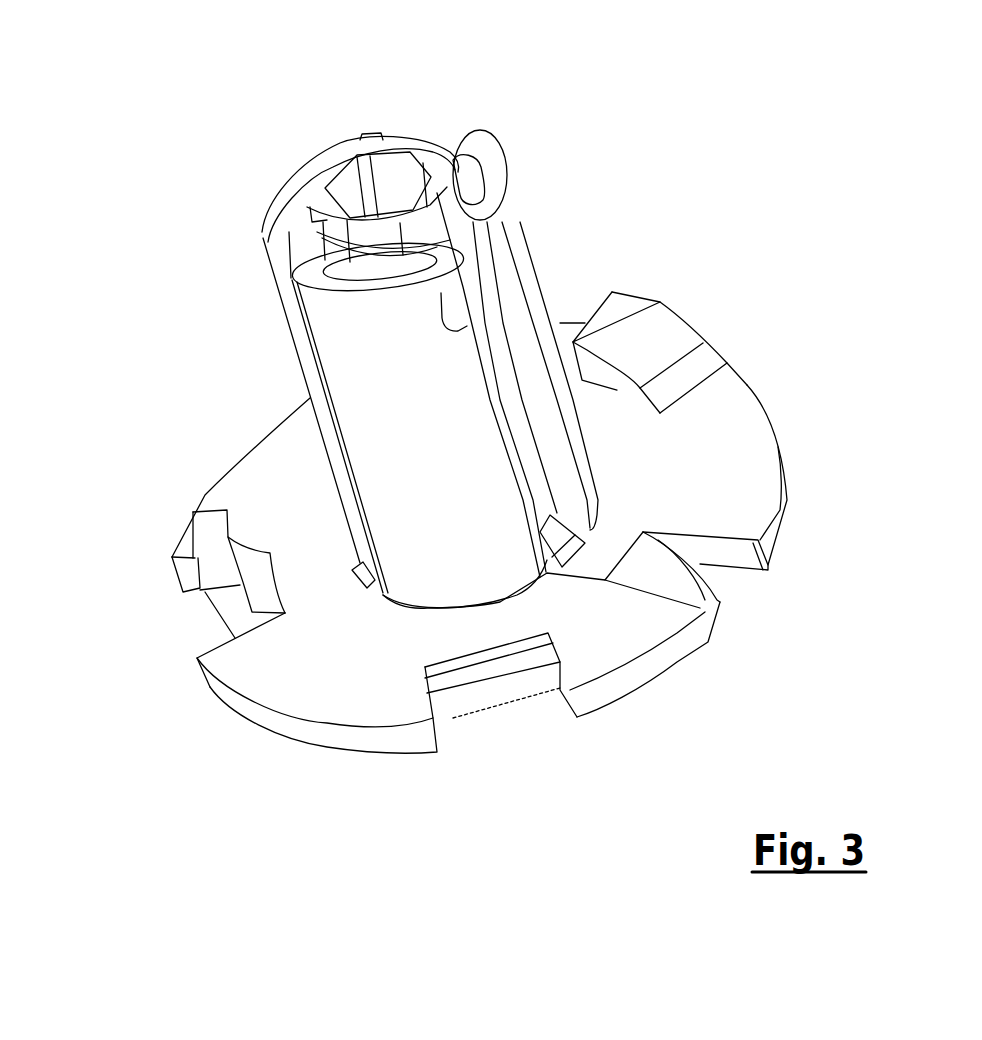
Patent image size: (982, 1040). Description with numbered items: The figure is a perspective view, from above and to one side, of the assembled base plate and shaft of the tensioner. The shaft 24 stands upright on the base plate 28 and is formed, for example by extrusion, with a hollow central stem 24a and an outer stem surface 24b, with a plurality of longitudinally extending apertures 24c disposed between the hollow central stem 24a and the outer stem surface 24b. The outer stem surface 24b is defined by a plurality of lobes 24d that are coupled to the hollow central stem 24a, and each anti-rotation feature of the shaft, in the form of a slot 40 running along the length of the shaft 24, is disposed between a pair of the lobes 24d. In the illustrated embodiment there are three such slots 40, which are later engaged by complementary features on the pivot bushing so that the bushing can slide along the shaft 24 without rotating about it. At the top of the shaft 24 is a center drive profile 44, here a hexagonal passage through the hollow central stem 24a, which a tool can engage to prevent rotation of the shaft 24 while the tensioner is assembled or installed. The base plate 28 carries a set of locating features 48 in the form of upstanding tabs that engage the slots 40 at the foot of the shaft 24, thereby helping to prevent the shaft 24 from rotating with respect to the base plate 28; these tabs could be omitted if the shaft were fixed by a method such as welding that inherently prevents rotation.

The shaft 24 is at (527, 167).
The hollow central stem 24a is at (433, 157).
The outer stem surface 24b is at (447, 332).
The longitudinally extending apertures 24c is at (470, 170).
The lobes 24d is at (497, 193).
The base plate 28 is at (748, 387).
The slots 40 is at (463, 240).
The center drive profile 44 is at (392, 167).
The locating features 48 is at (363, 563).